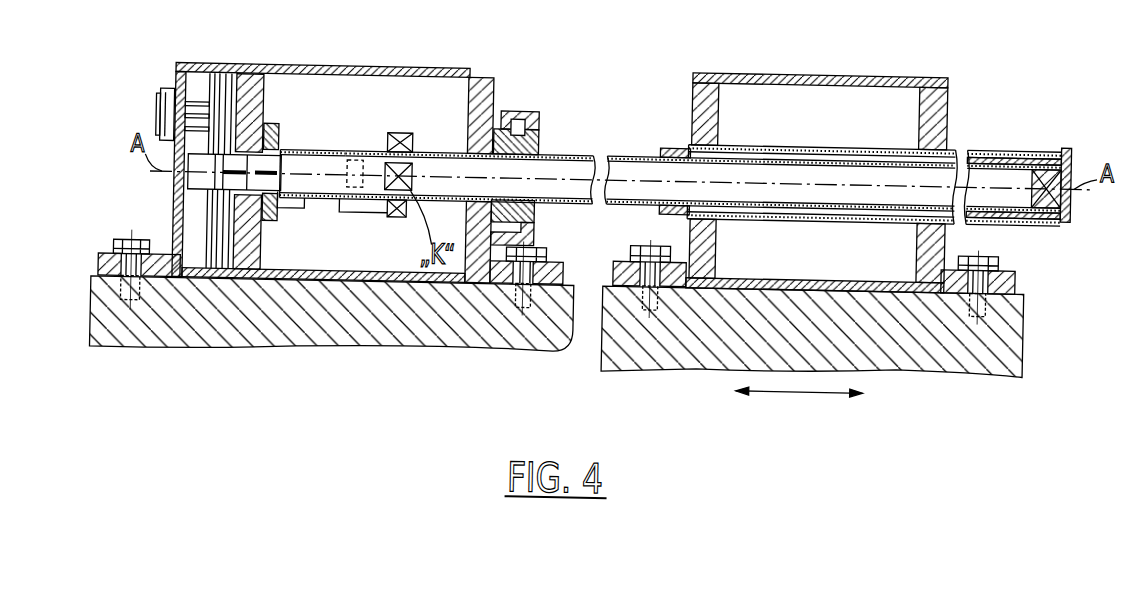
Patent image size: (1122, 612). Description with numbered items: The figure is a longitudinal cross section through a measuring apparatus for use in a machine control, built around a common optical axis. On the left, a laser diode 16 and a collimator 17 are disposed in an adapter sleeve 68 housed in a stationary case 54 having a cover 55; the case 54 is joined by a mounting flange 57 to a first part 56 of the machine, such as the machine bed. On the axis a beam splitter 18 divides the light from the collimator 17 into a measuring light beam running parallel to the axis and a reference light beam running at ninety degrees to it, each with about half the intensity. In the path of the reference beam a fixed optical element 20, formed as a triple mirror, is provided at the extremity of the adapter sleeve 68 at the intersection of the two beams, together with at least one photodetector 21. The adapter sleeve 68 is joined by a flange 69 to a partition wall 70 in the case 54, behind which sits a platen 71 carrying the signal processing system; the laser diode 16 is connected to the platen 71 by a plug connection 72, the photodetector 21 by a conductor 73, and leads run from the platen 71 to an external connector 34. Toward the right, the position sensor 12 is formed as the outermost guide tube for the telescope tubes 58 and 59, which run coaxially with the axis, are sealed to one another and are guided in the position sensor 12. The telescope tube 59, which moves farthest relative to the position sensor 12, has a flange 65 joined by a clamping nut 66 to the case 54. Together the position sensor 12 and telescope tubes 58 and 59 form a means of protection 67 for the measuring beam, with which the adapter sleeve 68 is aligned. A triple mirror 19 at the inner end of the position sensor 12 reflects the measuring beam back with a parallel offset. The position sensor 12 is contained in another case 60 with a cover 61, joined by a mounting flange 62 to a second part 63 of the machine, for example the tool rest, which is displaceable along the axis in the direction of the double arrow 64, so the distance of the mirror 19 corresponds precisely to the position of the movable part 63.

The position sensor 12 is at (1061, 131).
The laser diode 16 is at (339, 178).
The collimator 17 is at (356, 156).
The beam splitter 18 is at (392, 180).
The mirror 19 is at (1032, 165).
The fixed optical element 20 is at (403, 134).
The photodetector 21 is at (405, 212).
The external connector 34 is at (160, 104).
The case 54 is at (487, 86).
The cover 55 is at (423, 67).
The first part of a machine 56 is at (358, 322).
The mounting flange 57 is at (168, 253).
The telescope tube 58 is at (978, 134).
The telescope tube 59 is at (618, 147).
The case 60 is at (942, 96).
The cover 61 is at (873, 66).
The mounting flange 62 is at (1017, 266).
The second part of the machine 63 is at (932, 341).
The double arrow 64 is at (810, 380).
The flange 65 is at (514, 122).
The clamping nut 66 is at (538, 130).
The means of protection 67 is at (661, 127).
The adapter sleeve 68 is at (300, 147).
The flange 69 is at (272, 121).
The partition wall 70 is at (250, 72).
The platen 71 is at (217, 72).
The plug connection 72 is at (270, 214).
The conductor 73 is at (335, 208).